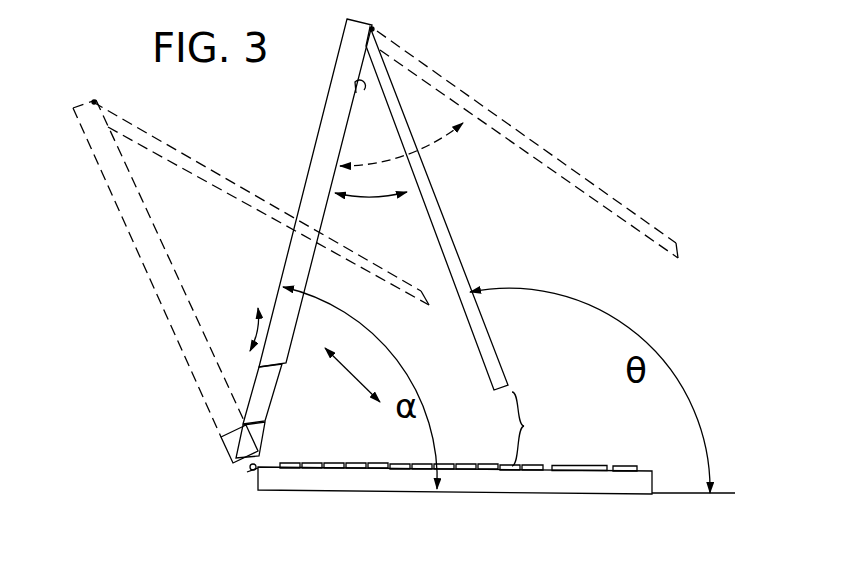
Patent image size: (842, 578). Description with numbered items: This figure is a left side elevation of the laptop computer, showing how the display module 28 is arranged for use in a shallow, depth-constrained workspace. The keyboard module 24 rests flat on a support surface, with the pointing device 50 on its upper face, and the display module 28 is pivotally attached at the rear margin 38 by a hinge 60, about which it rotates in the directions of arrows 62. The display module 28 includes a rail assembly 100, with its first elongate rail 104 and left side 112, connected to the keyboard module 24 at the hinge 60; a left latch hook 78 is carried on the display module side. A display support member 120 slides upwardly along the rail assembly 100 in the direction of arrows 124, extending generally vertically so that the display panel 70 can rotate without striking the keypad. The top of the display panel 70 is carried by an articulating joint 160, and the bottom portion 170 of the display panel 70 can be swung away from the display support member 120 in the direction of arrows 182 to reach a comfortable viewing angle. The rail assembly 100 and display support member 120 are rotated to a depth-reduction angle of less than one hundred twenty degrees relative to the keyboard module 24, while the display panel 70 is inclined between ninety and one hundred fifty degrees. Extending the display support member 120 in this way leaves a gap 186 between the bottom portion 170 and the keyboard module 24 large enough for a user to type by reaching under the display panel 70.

The keyboard module 24 is at (546, 501).
The display module 28 is at (432, 58).
The rear margin 38 is at (251, 472).
The pointing device 50 is at (583, 465).
The hinge 60 is at (251, 470).
The arrows 62 is at (356, 378).
The display panel 70 is at (455, 257).
The left latch hook 78 is at (364, 90).
The rail assembly 100 is at (214, 452).
The first elongate rail 104 is at (265, 398).
The left side 112 is at (266, 437).
The display support member 120 is at (328, 101).
The arrows 124 is at (256, 330).
The articulating joint 160 is at (374, 28).
The bottom portion 170 is at (680, 262).
The arrows 182 is at (444, 170).
The gap 186 is at (544, 429).